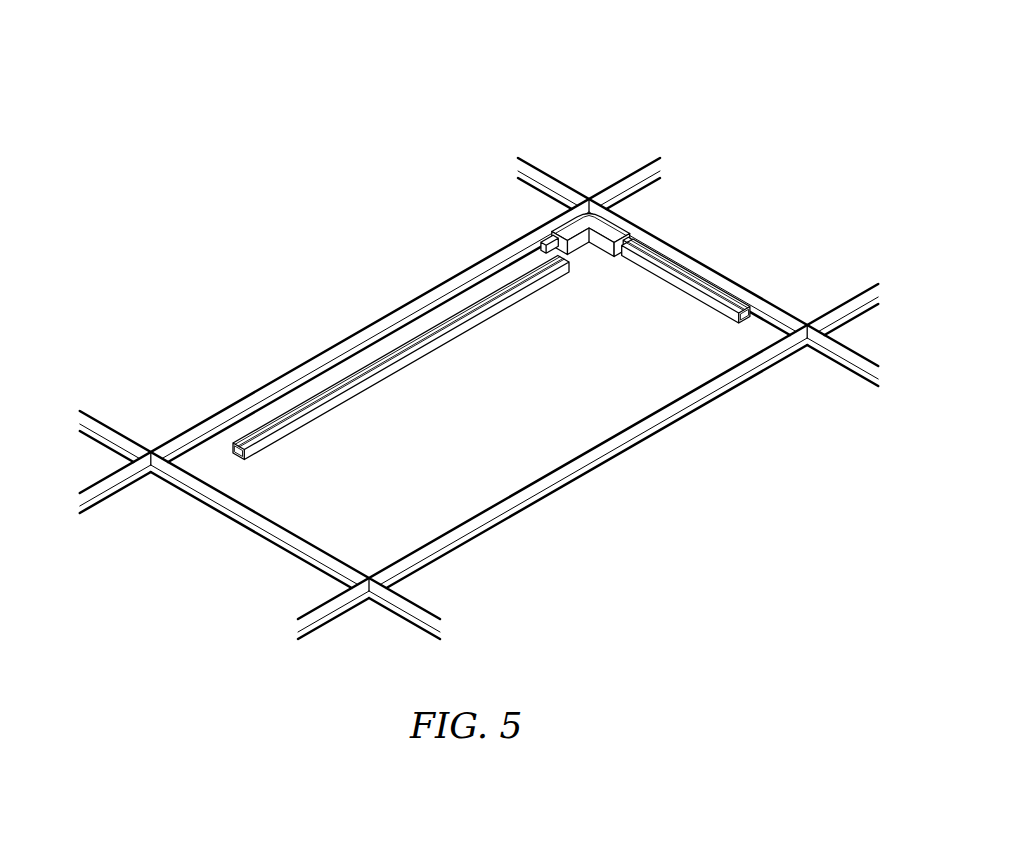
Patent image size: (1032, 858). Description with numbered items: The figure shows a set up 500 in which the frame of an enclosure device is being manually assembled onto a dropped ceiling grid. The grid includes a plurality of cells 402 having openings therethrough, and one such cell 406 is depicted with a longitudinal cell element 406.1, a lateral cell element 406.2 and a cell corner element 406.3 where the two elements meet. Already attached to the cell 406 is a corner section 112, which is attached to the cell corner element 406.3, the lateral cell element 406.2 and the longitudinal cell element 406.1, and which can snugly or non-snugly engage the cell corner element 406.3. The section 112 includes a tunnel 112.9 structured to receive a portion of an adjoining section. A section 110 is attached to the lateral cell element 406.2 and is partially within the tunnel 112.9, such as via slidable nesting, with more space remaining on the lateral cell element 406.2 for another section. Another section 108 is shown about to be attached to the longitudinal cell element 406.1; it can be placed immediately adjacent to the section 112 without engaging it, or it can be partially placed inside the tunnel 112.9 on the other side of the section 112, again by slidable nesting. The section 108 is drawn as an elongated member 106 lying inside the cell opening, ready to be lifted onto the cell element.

The set up 500 is at (653, 90).
The cells 402 is at (478, 382).
The cell 406 is at (778, 302).
The longitudinal cell element 406.1 is at (263, 387).
The lateral cell element 406.2 is at (718, 270).
The cell corner element 406.3 is at (590, 200).
The light bar 106 is at (401, 358).
The section 108 is at (468, 333).
The section 110 is at (715, 300).
The section 112 is at (576, 247).
The tunnel 112.9 is at (550, 237).